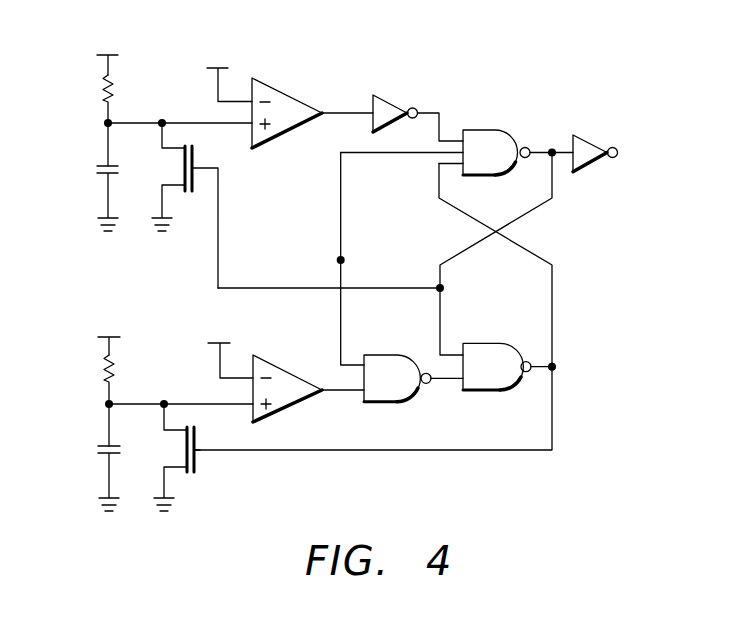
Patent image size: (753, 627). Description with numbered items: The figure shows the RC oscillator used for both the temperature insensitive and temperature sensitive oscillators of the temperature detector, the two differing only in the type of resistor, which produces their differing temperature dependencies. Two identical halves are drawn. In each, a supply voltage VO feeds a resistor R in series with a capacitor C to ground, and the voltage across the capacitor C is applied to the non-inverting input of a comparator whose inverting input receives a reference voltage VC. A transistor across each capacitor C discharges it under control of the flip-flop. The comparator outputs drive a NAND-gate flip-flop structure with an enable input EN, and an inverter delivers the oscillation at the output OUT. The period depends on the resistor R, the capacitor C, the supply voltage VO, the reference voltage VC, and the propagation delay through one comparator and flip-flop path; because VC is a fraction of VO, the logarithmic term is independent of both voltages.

The supply voltage VO is at (109, 189).
The resistor R is at (97, 260).
The capacitor C is at (100, 334).
The comparator reference voltage VC is at (230, 206).
The enable input EN is at (341, 260).
The oscillator output OUT is at (618, 152).